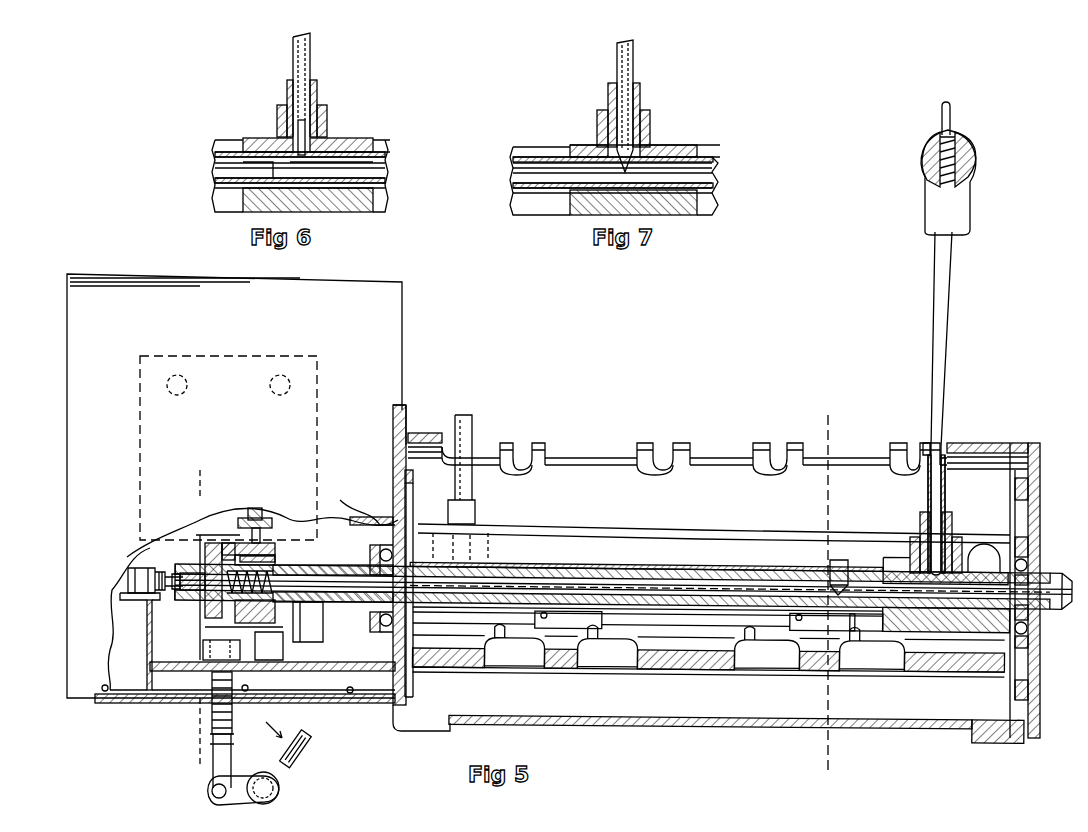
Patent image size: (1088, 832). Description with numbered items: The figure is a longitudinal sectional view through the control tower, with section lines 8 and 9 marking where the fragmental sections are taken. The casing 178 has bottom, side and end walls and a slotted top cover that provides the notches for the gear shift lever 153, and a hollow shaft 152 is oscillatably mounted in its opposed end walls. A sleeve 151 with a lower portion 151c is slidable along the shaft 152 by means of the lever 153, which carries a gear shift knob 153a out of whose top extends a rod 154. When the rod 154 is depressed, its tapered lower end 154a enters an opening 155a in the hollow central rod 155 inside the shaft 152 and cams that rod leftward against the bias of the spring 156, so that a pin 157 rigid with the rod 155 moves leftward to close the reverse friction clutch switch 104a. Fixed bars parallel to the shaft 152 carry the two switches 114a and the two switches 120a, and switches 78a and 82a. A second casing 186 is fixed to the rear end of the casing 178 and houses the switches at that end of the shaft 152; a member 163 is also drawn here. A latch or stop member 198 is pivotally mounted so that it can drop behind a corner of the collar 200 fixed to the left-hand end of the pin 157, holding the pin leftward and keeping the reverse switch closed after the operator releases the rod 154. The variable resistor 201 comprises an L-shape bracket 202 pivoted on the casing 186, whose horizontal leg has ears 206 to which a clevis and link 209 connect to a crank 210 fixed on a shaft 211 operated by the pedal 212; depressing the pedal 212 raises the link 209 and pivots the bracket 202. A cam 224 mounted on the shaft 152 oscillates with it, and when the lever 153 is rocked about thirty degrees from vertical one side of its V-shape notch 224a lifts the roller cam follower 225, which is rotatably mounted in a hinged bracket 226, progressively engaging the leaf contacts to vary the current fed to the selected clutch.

In FIG. 5, the section line 8- 8 is at (838, 428).
In FIG. 5, the section line 9- 9 is at (190, 487).
In FIG. 5, the switch 78a is at (873, 620).
In FIG. 5, the switch 82a is at (790, 620).
In FIG. 5, the reverse friction clutch switch 104a is at (140, 580).
In FIG. 5, the switches 114a is at (757, 680).
In FIG. 5, the switches 120a is at (605, 672).
In FIG. 7, the sleeve 151 is at (585, 145).
In FIG. 5, the sleeve 151 is at (895, 560).
In FIG. 7, the nut 151c is at (680, 208).
In FIG. 5, the nut 151c is at (945, 620).
In FIG. 7, the hollow shaft 152 is at (548, 150).
In FIG. 5, the hollow shaft 152 is at (795, 574).
In FIG. 7, the gear shift lever 153 is at (634, 63).
In FIG. 5, the gear shift lever 153 is at (940, 343).
In FIG. 5, the gear shift knob 153a is at (973, 158).
In FIG. 5, the rod 154 is at (952, 110).
In FIG. 6, the tapered lower end 154a is at (325, 128).
In FIG. 7, the tapered lower end 154a is at (652, 145).
In FIG. 5, the tapered lower end 154a is at (840, 560).
In FIG. 6, the hollow central rod 155 is at (355, 150).
In FIG. 5, the hollow central rod 155 is at (560, 567).
In FIG. 6, the opening 155a is at (300, 162).
In FIG. 5, the opening 155a is at (600, 580).
In FIG. 5, the spring 156 is at (275, 572).
In FIG. 5, the pin 157 is at (312, 578).
In FIG. 5, the lever 163 is at (215, 535).
In FIG. 5, the casing 178 is at (620, 442).
In FIG. 5, the casing 186 is at (385, 375).
In FIG. 5, the latch or stop member 198 is at (200, 562).
In FIG. 5, the collar 200 is at (205, 580).
In FIG. 5, the variable resistor 201 is at (285, 355).
In FIG. 5, the L-shape bracket 202 is at (320, 415).
In FIG. 5, the ears 206 is at (203, 640).
In FIG. 5, the link 209 is at (232, 745).
In FIG. 5, the crank 210 is at (245, 785).
In FIG. 5, the shaft 211 is at (280, 792).
In FIG. 5, the pedal 212 is at (306, 745).
In FIG. 5, the cam 224 is at (268, 560).
In FIG. 5, the V-shape notch 224a is at (268, 543).
In FIG. 5, the roller cam follower 225 is at (262, 530).
In FIG. 5, the bracket 226 is at (255, 508).